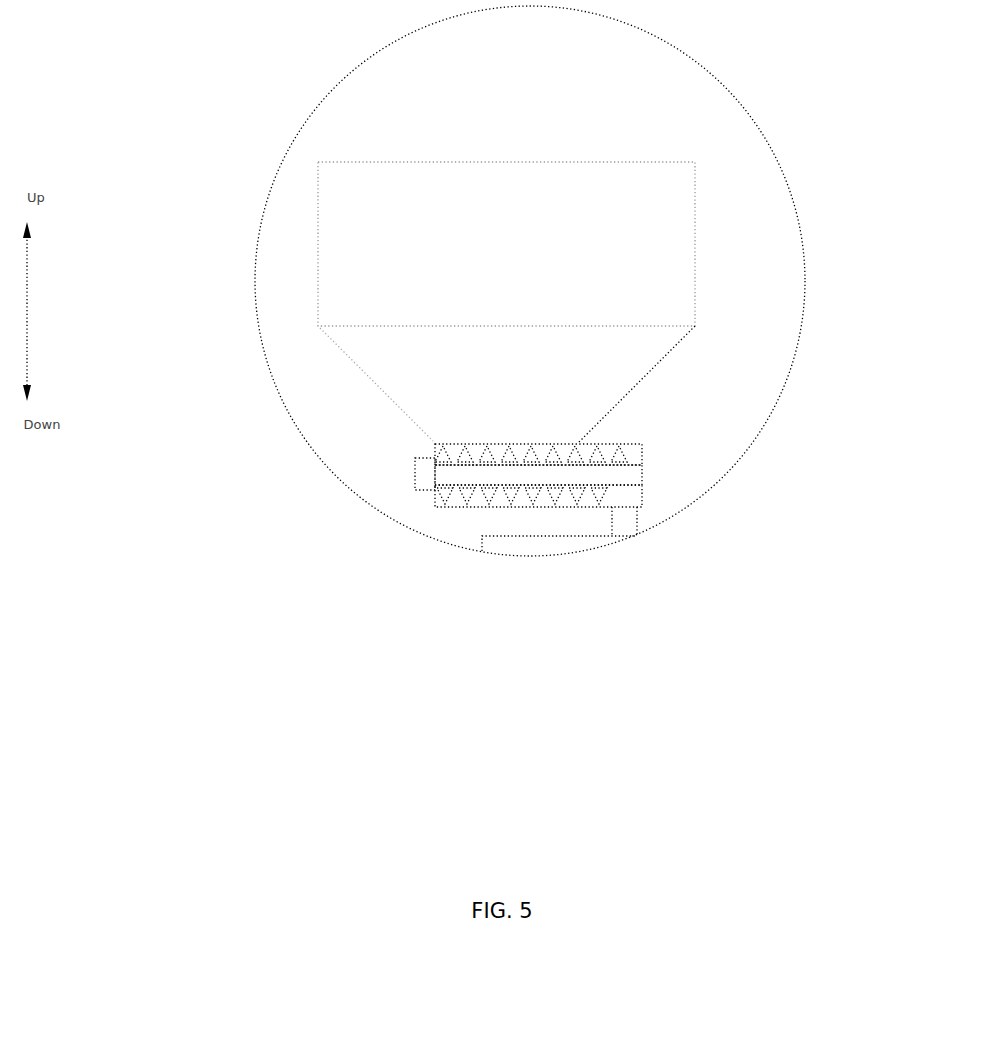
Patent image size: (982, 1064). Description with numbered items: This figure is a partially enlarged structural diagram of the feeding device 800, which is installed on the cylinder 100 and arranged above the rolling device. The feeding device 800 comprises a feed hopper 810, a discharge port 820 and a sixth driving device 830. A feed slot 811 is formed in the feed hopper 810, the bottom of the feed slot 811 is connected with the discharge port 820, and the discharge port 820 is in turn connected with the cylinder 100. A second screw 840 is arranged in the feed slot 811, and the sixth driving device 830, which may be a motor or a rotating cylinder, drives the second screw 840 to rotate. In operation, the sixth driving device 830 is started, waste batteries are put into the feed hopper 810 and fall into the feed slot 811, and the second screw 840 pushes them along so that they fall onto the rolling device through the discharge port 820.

The feeding device 800 is at (285, 242).
The feed hopper 810 is at (400, 215).
The feed slot 811 is at (643, 447).
The second screw 840 is at (647, 490).
The discharge port 820 is at (653, 557).
The sixth driving device 830 is at (427, 473).
The cylinder 100 is at (525, 545).